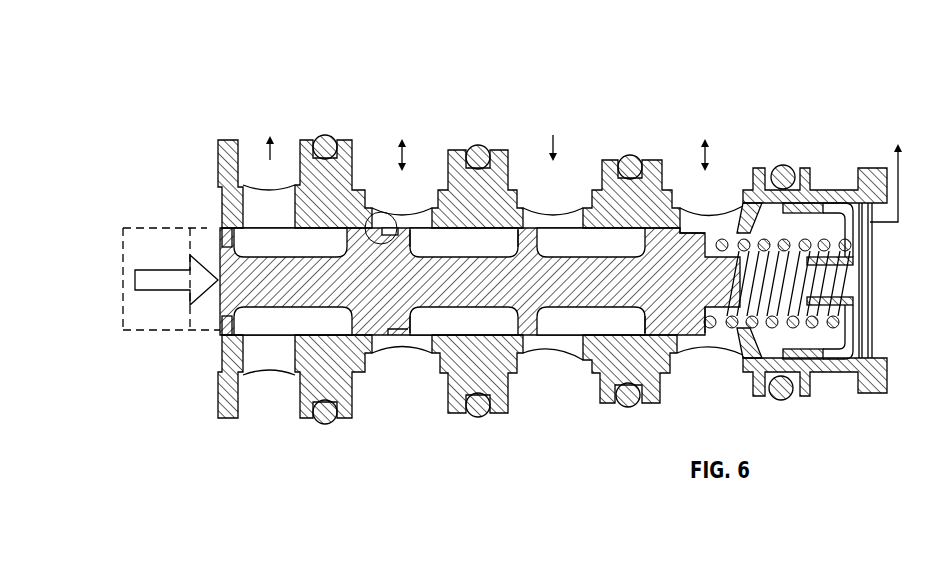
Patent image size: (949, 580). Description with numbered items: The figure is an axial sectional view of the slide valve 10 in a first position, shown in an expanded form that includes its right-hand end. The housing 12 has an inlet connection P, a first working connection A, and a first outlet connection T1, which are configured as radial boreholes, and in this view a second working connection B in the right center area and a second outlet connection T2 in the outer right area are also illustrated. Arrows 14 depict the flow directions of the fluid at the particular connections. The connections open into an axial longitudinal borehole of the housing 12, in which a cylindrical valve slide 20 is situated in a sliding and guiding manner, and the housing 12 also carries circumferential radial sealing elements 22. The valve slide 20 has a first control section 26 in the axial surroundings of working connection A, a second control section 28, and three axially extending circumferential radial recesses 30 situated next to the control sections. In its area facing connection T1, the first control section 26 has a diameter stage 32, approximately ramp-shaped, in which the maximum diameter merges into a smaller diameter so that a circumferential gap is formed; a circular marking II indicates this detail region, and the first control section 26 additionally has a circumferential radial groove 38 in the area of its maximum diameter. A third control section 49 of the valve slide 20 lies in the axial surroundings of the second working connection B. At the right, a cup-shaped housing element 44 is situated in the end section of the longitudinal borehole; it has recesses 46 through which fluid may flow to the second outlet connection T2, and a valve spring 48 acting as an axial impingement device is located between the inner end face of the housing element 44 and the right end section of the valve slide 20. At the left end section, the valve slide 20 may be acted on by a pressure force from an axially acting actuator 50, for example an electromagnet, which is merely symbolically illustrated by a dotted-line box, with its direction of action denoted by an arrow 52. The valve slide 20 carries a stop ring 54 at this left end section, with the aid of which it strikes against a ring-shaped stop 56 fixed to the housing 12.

The slide valve 10 is at (750, 88).
The housing 12 is at (500, 377).
The arrows 14 is at (266, 150).
The valve slide 20 is at (675, 318).
The radial sealing elements 22 is at (326, 135).
The first control section 26 is at (382, 252).
The second control section 28 is at (517, 252).
The radial recesses 30 is at (297, 320).
The diameter stage 32 is at (380, 262).
The radial groove 38 is at (380, 262).
The cup-shaped housing element 44 is at (848, 290).
The recesses 46 is at (837, 212).
The valve spring 48 is at (803, 215).
The third control section 49 is at (660, 258).
The actuator 50 is at (150, 245).
The arrow 52 is at (170, 283).
The stop ring 54 is at (226, 322).
The ring-shaped stop 56 is at (222, 240).
The first outlet connection T1 is at (272, 197).
The second outlet connection T2 is at (870, 260).
The first working connection A is at (404, 213).
The second working connection B is at (708, 219).
The inlet connection P is at (558, 217).
The detail II is at (381, 211).